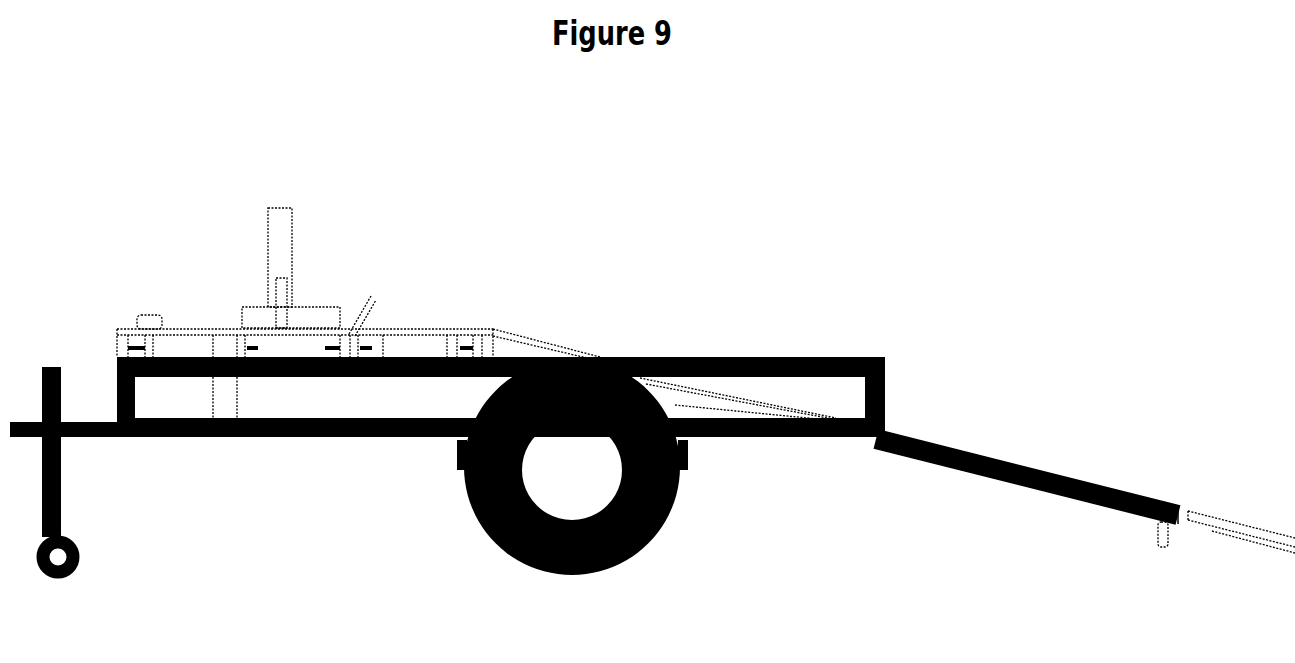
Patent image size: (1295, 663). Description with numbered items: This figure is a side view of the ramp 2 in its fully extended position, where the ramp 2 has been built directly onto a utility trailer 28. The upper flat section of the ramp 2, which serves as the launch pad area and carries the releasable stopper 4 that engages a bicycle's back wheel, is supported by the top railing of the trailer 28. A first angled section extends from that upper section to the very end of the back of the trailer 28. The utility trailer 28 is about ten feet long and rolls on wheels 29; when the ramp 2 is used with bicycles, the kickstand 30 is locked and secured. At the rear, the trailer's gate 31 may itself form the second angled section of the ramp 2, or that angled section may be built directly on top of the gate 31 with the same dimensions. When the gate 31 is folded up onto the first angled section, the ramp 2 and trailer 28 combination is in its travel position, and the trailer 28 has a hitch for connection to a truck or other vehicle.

The ramp 2 is at (480, 312).
The releasable stopper 4 is at (364, 310).
The utility trailer 28 is at (173, 437).
The wheels 29 is at (507, 540).
The kickstand 30 is at (80, 558).
The trailer's gate 31 is at (1008, 482).